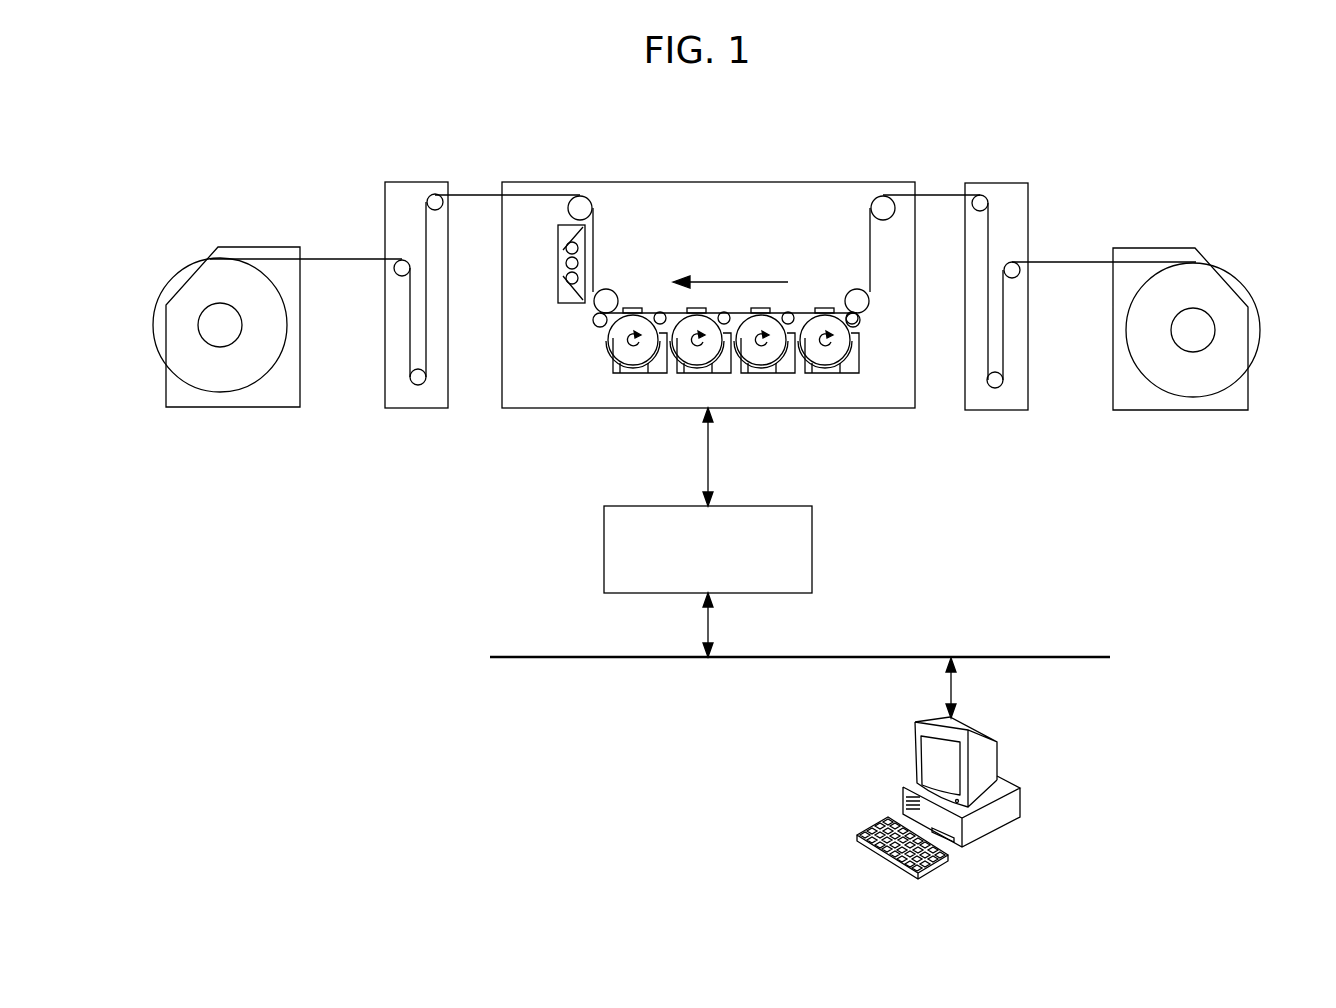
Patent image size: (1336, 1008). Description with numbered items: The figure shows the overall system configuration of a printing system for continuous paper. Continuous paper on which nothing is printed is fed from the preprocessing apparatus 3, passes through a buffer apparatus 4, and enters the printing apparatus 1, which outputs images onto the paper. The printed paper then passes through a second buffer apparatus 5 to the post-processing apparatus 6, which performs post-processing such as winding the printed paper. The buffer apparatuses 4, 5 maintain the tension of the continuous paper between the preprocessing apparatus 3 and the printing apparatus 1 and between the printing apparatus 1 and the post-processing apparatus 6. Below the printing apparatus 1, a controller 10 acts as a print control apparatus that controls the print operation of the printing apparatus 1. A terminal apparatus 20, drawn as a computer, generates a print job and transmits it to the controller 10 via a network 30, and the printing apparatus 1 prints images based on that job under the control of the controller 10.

The printing apparatus 1 is at (697, 182).
The preprocessing apparatus 3 is at (1159, 248).
The buffer apparatus 4 is at (992, 183).
The buffer apparatus 5 is at (415, 182).
The post-processing apparatus 6 is at (258, 247).
The controller 10 is at (789, 506).
The terminal apparatus 20 is at (998, 748).
The network 30 is at (999, 657).